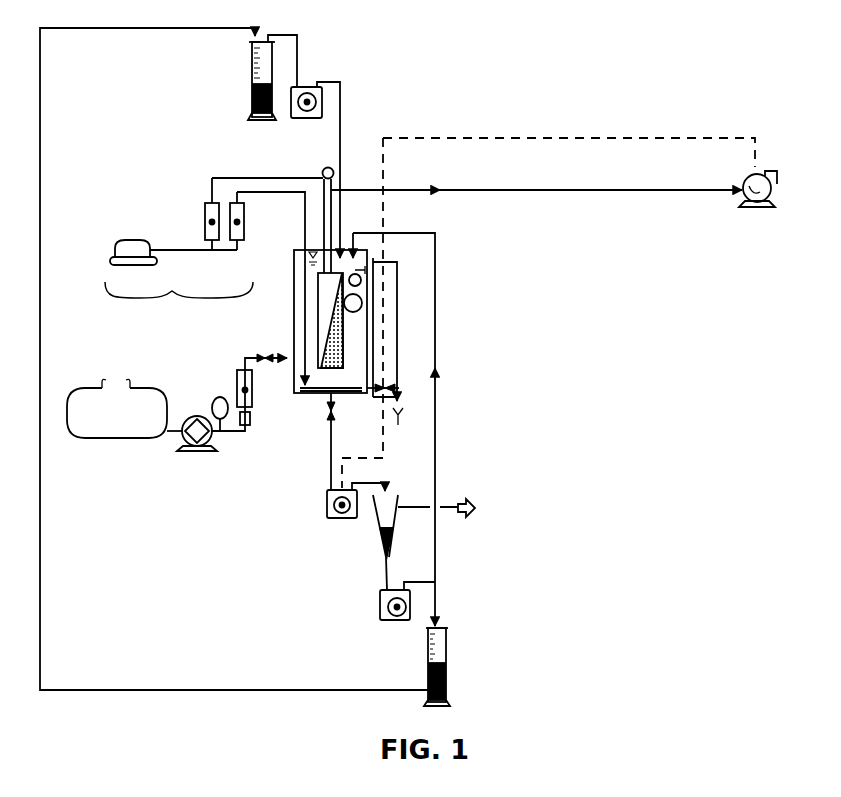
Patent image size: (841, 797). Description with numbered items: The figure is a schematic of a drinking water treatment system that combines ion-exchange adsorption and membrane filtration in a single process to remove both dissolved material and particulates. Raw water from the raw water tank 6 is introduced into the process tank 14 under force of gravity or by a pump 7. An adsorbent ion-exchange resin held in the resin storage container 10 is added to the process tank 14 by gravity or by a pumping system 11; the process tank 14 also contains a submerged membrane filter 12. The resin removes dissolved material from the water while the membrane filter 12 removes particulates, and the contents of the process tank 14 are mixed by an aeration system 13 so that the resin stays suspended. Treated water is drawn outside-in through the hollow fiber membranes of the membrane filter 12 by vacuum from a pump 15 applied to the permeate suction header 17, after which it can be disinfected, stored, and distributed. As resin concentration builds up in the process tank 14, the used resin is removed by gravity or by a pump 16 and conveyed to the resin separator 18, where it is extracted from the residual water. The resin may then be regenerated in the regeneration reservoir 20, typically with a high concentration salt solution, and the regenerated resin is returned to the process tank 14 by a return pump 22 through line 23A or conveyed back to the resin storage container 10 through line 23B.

The raw water tank 6 is at (112, 427).
The pump 7 is at (187, 436).
The resin storage container 10 is at (252, 95).
The pumping system 11 is at (308, 98).
The submerged membrane filter 12 is at (320, 318).
The aeration system 13 is at (154, 307).
The process tank 14 is at (340, 320).
The pump 15 is at (760, 184).
The pump 16 is at (327, 506).
The permeate suction header 17 is at (396, 188).
The resin separator 18 is at (389, 520).
The regeneration reservoir 20 is at (447, 675).
The return pump 22 is at (380, 604).
The line 23A is at (437, 468).
The line 23B is at (187, 692).